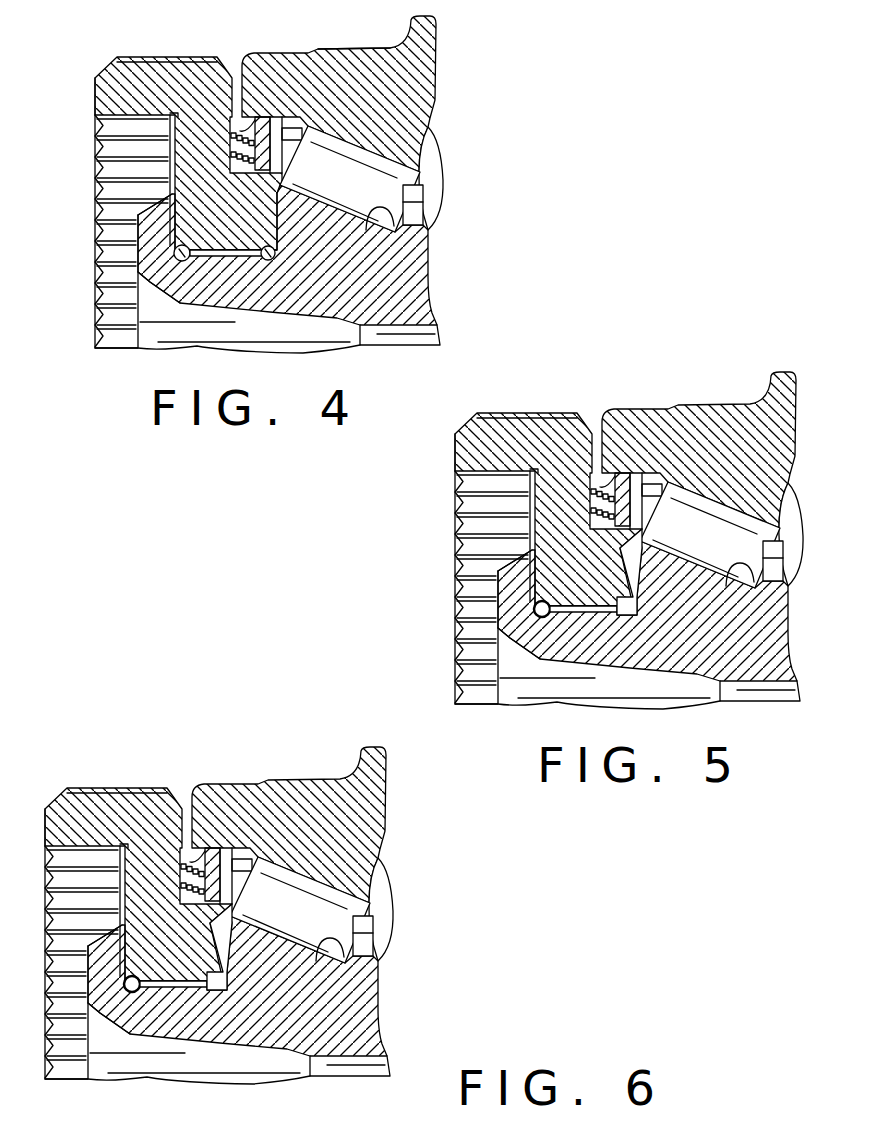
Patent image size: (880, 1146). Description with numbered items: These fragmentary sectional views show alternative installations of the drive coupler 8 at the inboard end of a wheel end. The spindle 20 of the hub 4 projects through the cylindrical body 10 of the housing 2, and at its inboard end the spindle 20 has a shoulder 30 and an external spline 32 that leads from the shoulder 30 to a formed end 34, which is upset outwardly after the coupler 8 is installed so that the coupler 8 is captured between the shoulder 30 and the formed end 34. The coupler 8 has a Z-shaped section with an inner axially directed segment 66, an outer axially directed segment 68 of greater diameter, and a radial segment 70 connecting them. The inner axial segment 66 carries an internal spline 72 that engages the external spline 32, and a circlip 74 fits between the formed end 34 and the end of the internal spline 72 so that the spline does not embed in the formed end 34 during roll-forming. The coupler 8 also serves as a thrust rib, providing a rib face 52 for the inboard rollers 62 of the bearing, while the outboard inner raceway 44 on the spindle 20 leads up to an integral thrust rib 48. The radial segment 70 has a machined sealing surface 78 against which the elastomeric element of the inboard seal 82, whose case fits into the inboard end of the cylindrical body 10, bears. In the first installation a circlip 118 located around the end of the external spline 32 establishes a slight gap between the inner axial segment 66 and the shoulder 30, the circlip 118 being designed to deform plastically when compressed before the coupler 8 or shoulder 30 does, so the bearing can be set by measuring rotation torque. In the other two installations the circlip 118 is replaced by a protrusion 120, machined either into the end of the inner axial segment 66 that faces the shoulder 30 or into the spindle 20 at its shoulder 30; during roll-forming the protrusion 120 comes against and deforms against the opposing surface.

In FIG. 4, the housing 2 is at (432, 55).
In FIG. 5, the housing 2 is at (702, 470).
In FIG. 6, the housing 2 is at (292, 838).
In FIG. 4, the hub 4 is at (428, 275).
In FIG. 5, the hub 4 is at (663, 621).
In FIG. 6, the hub 4 is at (258, 996).
In FIG. 4, the drive coupler 8 is at (168, 57).
In FIG. 5, the drive coupler 8 is at (548, 488).
In FIG. 6, the drive coupler 8 is at (138, 852).
In FIG. 4, the cylindrical body 10 is at (373, 72).
In FIG. 4, the spindle 20 is at (388, 310).
In FIG. 5, the spindle 20 is at (625, 709).
In FIG. 6, the spindle 20 is at (215, 1069).
In FIG. 4, the shoulder 30 is at (230, 258).
In FIG. 5, the shoulder 30 is at (583, 674).
In FIG. 6, the shoulder 30 is at (185, 1051).
In FIG. 4, the external spline 32 is at (198, 278).
In FIG. 5, the external spline 32 is at (506, 588).
In FIG. 6, the external spline 32 is at (101, 961).
In FIG. 4, the formed end 34 is at (150, 240).
In FIG. 5, the formed end 34 is at (467, 602).
In FIG. 6, the formed end 34 is at (78, 954).
In FIG. 4, the outboard inner raceway 44 is at (360, 153).
In FIG. 4, the thrust rib 48 is at (378, 214).
In FIG. 4, the rib face 52 is at (300, 195).
In FIG. 5, the rib face 52 is at (744, 581).
In FIG. 4, the inboard rollers 62 is at (412, 190).
In FIG. 5, the inboard rollers 62 is at (802, 539).
In FIG. 4, the inner axially directed segment 66 is at (220, 210).
In FIG. 5, the inner axially directed segment 66 is at (484, 555).
In FIG. 6, the inner axially directed segment 66 is at (96, 984).
In FIG. 4, the outer axially directed segment 68 is at (146, 88).
In FIG. 4, the radial segment 70 is at (198, 147).
In FIG. 4, the internal spline 72 is at (131, 231).
In FIG. 5, the internal spline 72 is at (491, 587).
In FIG. 6, the internal spline 72 is at (81, 962).
In FIG. 4, the circlip 74 is at (140, 272).
In FIG. 4, the sealing surface 78 is at (245, 113).
In FIG. 4, the inboard seal 82 is at (264, 133).
In FIG. 4, the circlip 118 is at (268, 262).
In FIG. 5, the protrusion 120 is at (656, 636).
In FIG. 6, the protrusion 120 is at (185, 1012).